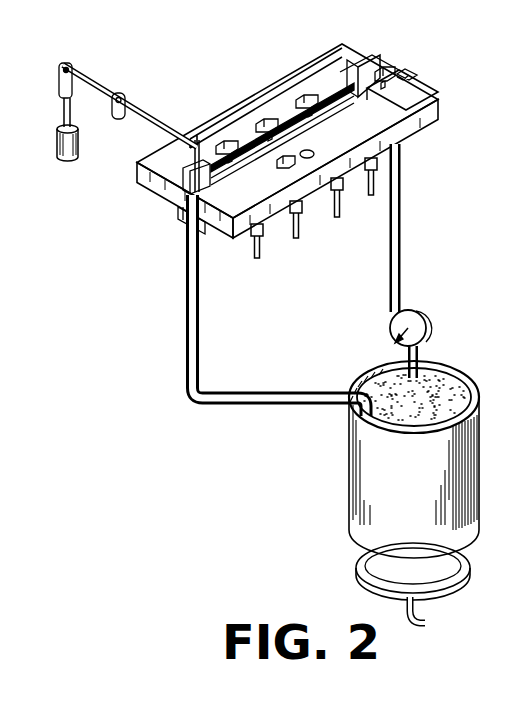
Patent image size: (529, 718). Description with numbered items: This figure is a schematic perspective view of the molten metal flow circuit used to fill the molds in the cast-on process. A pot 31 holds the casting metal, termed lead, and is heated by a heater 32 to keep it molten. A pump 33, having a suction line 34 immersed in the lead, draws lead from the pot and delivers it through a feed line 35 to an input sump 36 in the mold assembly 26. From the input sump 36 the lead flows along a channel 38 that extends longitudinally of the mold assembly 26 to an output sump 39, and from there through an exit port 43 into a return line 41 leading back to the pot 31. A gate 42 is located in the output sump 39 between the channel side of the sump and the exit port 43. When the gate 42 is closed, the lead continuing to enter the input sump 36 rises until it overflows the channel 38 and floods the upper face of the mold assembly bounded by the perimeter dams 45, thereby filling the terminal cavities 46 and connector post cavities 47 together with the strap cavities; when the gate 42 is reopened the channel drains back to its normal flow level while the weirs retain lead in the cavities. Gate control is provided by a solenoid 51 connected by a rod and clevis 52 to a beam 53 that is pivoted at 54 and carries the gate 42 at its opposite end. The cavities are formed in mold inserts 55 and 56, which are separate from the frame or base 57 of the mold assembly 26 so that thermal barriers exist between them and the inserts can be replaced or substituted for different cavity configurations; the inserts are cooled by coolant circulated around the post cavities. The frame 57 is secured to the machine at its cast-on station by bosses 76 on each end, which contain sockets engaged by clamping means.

The mold assembly 26 is at (301, 136).
The pot 31 is at (363, 493).
The heater 32 is at (437, 597).
The pump 33 is at (390, 342).
The suction line 34 is at (430, 343).
The feed line 35 is at (400, 237).
The input sump 36 is at (385, 63).
The channel 38 is at (360, 92).
The output sump 39 is at (163, 178).
The return line 41 is at (260, 395).
The gate 42 is at (180, 172).
The exit port 43 is at (178, 223).
The perimeter dams 45 is at (258, 95).
The terminal cavities 46 is at (280, 200).
The connector post cavities 47 is at (314, 165).
The solenoid 51 is at (62, 157).
The rod and clevis 52 is at (76, 118).
The beam 53 is at (90, 83).
The pivot 54 is at (118, 93).
The mold insert 55 is at (356, 170).
The mold insert 56 is at (308, 83).
The frame or base 57 is at (440, 89).
The bosses 76 is at (410, 68).